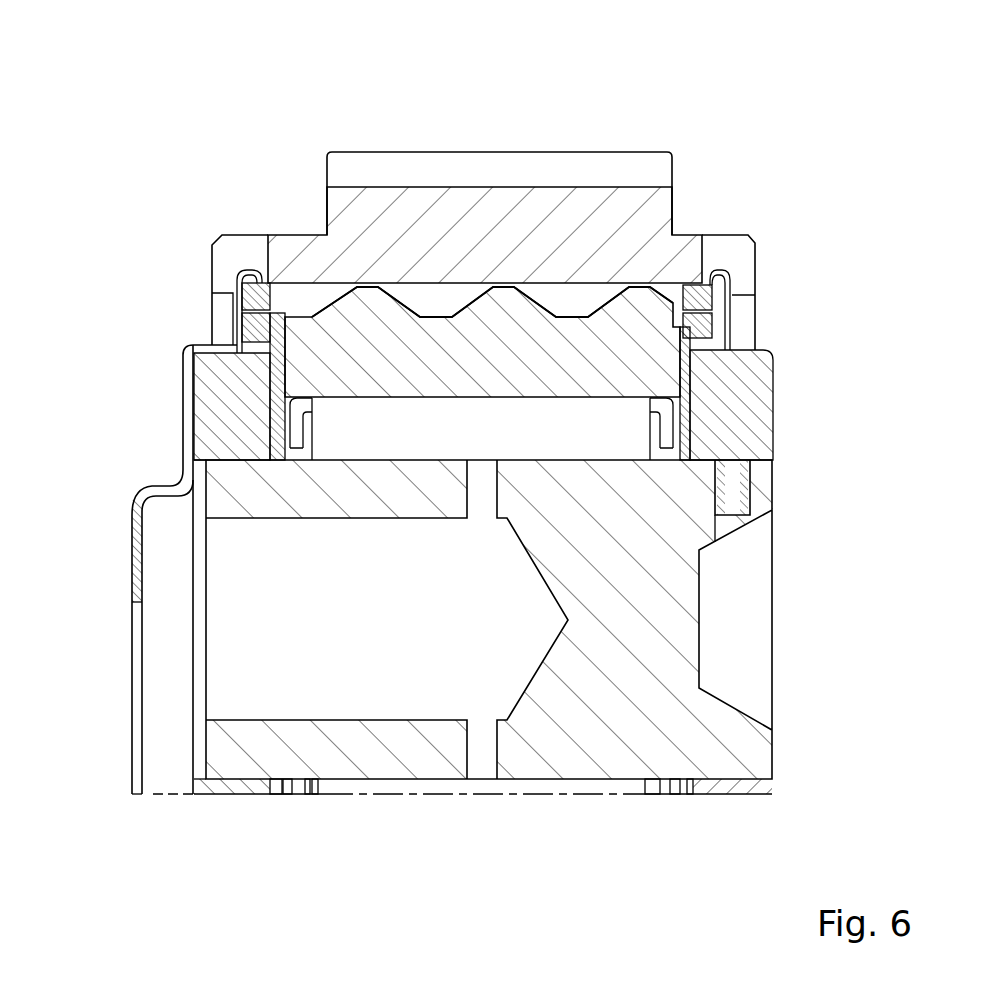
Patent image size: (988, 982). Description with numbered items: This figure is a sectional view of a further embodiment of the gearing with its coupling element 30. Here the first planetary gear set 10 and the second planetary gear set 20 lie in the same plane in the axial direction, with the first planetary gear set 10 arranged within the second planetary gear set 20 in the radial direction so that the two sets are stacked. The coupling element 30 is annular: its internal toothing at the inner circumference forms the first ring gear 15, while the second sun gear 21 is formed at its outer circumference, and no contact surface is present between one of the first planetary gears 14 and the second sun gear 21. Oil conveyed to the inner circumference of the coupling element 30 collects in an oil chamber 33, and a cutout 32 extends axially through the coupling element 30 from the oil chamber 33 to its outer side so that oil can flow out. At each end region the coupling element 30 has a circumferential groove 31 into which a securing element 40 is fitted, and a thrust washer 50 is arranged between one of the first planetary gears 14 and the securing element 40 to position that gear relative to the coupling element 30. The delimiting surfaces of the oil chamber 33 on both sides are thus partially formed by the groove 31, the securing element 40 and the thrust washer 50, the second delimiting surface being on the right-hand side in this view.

The first planetary gear set 10 is at (163, 405).
The first planetary gear 14 is at (482, 202).
The first ring gear 15 is at (442, 303).
The second planetary gear set 20 is at (580, 145).
The second sun gear 21 is at (605, 165).
The coupling element 30 is at (240, 198).
The circumferential groove 31 is at (260, 273).
The cutout 32 is at (230, 313).
The oil chamber 33 is at (303, 300).
The securing element 40 is at (247, 287).
The thrust washer 50 is at (260, 328).